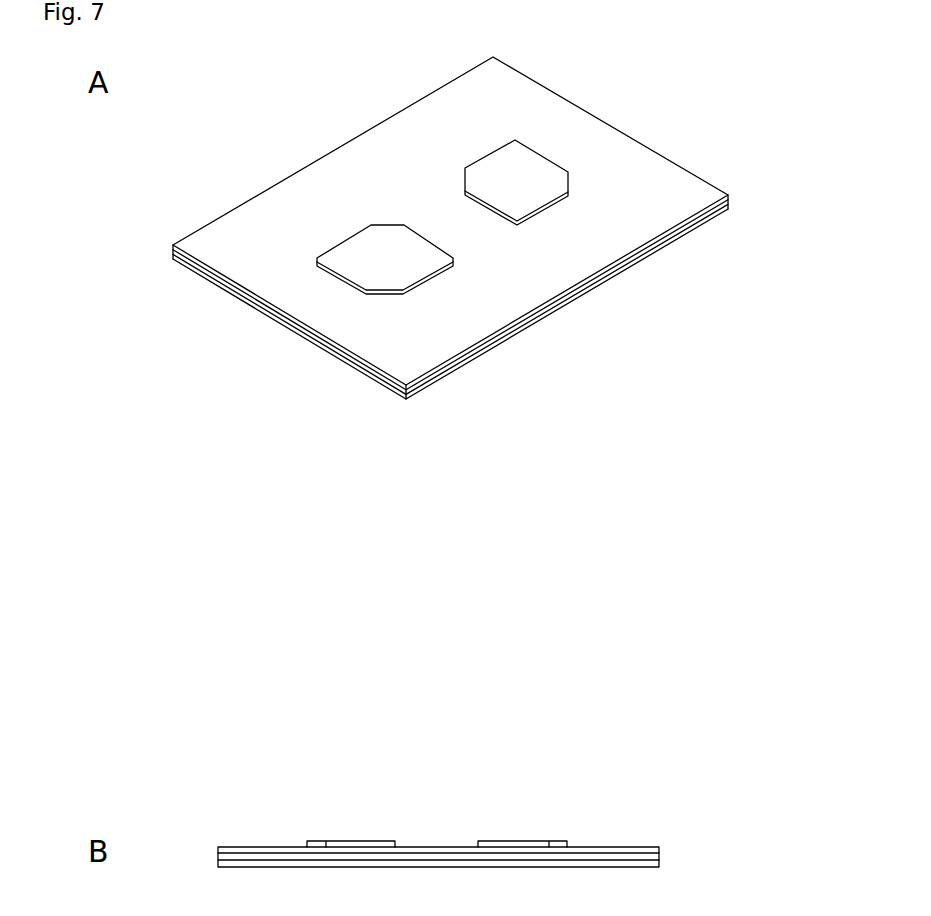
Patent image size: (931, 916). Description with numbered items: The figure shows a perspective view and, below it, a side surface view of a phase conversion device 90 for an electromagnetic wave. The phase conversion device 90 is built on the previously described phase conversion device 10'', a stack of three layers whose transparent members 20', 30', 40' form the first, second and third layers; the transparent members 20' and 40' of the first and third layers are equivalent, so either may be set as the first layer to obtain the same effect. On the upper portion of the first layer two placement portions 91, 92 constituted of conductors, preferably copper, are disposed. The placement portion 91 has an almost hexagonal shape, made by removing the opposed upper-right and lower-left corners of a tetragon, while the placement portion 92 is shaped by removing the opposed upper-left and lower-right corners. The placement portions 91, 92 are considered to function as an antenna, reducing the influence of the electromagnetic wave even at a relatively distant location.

The phase conversion device 90 is at (808, 88).
The phase conversion device 10'' is at (457, 463).
The transparent member 20' is at (418, 295).
The transparent member 30' is at (418, 299).
The transparent member 40' is at (418, 304).
The placement portion 91 is at (407, 274).
The placement portion 92 is at (540, 200).